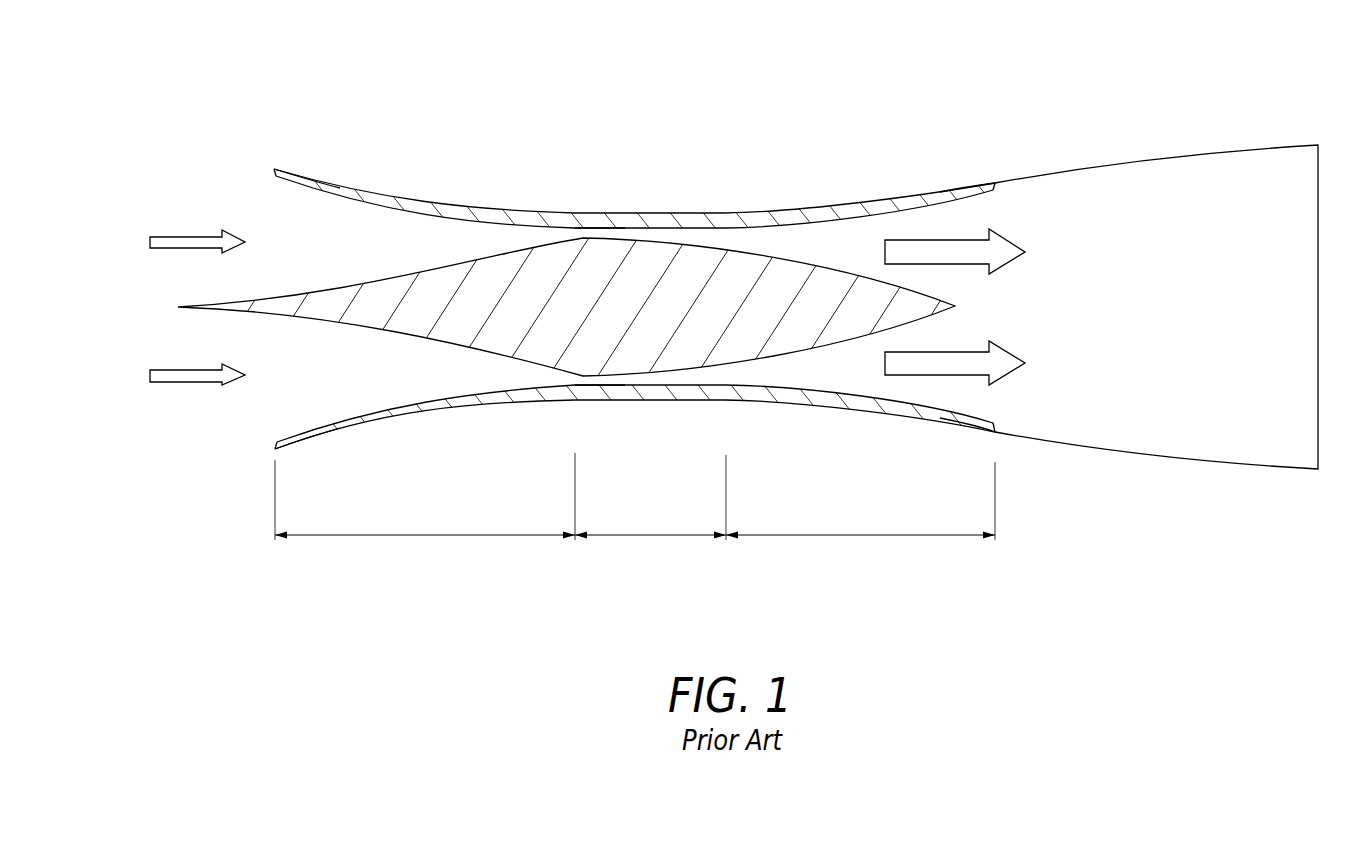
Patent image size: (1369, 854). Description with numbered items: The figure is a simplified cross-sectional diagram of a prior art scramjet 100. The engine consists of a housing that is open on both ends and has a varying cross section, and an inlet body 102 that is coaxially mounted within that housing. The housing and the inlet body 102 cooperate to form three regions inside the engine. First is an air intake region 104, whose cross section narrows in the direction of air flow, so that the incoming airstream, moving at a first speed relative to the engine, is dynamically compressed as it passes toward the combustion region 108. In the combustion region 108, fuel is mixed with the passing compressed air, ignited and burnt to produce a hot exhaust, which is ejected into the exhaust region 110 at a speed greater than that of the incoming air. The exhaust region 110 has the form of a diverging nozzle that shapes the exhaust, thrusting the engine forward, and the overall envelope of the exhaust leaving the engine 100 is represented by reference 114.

The scramjet 100 is at (222, 88).
The inlet body 102 is at (397, 297).
The air intake region 104 is at (427, 565).
The combustion region 108 is at (651, 594).
The exhaust region 110 is at (863, 570).
The overall envelope of the exhaust 114 is at (1288, 470).